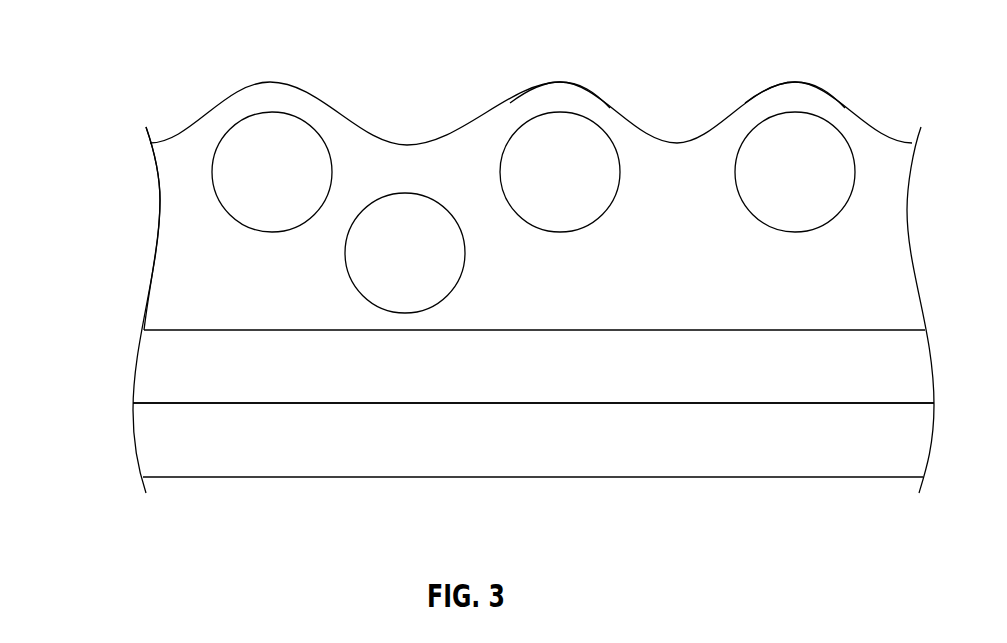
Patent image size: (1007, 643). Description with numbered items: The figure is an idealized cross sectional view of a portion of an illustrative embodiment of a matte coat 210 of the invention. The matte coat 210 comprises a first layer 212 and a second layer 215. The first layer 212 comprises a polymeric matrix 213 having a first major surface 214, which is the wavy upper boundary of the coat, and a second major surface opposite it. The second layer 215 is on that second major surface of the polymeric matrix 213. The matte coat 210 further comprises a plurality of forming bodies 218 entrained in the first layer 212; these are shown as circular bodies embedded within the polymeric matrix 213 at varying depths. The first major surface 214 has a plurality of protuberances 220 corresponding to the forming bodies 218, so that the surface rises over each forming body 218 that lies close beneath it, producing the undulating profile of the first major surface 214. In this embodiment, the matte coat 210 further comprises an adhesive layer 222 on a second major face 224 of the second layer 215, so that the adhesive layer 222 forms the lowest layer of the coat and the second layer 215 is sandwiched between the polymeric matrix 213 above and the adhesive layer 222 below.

The matte coat 210 is at (133, 59).
The first layer 212 is at (95, 143).
The polymeric matrix 213 is at (182, 208).
The first major surface 214 is at (422, 143).
The second layer 215 is at (95, 331).
The forming bodies 218 is at (268, 148).
The protuberances 220 is at (558, 82).
The adhesive layer 222 is at (225, 457).
The second major face 224 is at (740, 403).